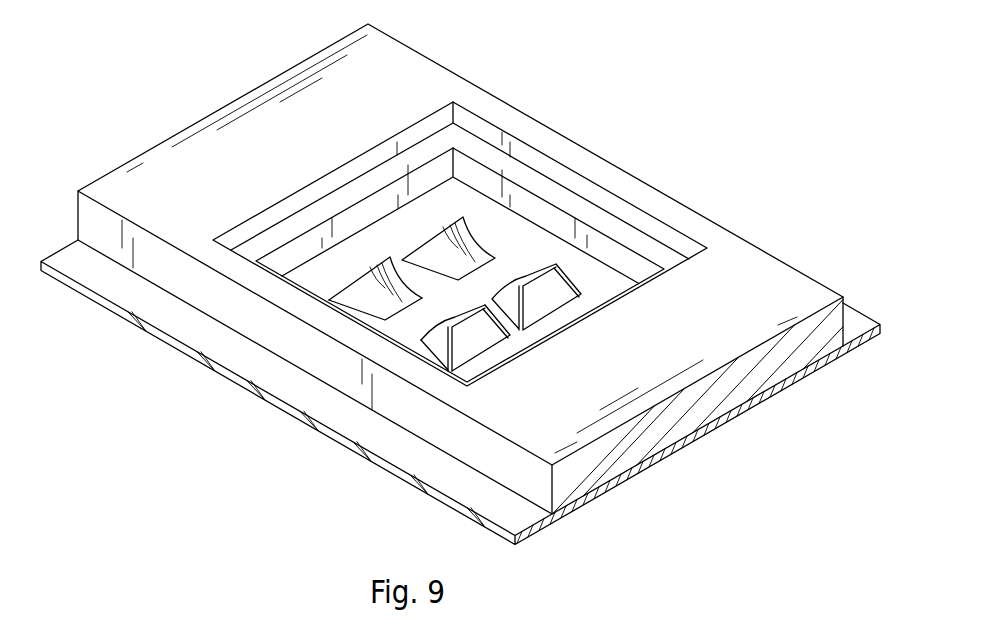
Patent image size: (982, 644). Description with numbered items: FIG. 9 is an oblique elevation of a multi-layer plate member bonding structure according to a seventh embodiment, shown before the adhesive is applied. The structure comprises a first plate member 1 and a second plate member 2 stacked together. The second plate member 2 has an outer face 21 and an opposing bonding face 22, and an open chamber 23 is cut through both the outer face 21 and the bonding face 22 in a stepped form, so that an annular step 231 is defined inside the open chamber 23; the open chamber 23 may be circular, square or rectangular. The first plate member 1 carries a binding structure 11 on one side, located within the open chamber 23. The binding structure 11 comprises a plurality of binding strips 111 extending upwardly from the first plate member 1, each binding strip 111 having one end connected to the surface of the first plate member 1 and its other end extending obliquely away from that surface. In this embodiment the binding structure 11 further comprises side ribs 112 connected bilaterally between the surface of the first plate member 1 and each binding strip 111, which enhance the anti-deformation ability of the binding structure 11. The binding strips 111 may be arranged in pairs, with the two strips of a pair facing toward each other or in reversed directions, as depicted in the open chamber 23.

The first plate member 1 is at (263, 401).
The second plate member 2 is at (796, 265).
The outer face 21 is at (728, 245).
The bonding face 22 is at (699, 436).
The open chamber 23 is at (546, 204).
The annular step 231 is at (481, 140).
The binding structure 11 is at (402, 252).
The binding strip 111 is at (455, 245).
The side rib 112 is at (435, 268).